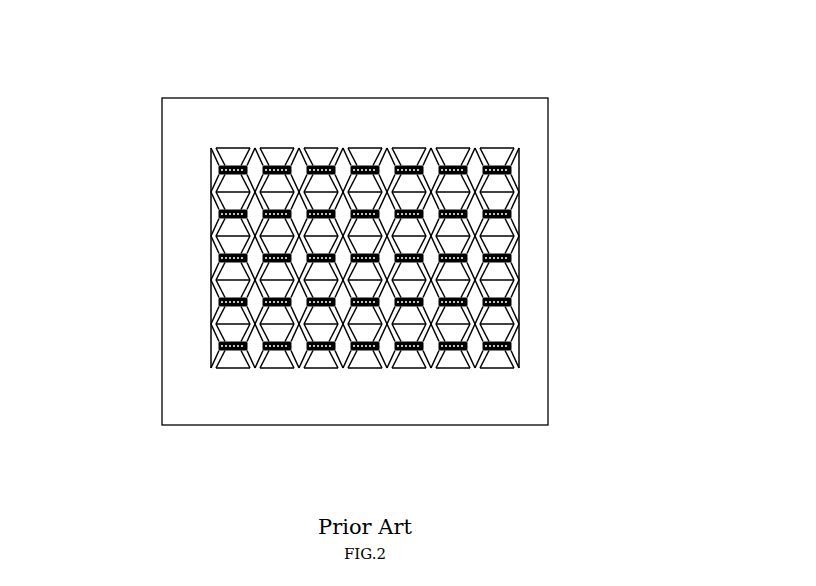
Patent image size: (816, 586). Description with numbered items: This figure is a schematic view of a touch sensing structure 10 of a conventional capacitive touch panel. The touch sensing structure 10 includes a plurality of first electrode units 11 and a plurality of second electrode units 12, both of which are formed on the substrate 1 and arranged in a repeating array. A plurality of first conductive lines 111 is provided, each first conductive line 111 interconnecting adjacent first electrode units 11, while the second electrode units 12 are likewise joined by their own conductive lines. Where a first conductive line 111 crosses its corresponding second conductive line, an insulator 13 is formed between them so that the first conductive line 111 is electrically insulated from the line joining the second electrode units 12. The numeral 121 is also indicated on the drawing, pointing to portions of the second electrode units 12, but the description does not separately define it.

The substrate 1 is at (230, 425).
The touch sensing structure 10 is at (203, 121).
The first electrode units 11 is at (218, 211).
The first conductive lines 111 is at (518, 218).
The second electrode units 12 is at (237, 157).
The mesh line segments 121 is at (455, 162).
The insulators 13 is at (373, 352).